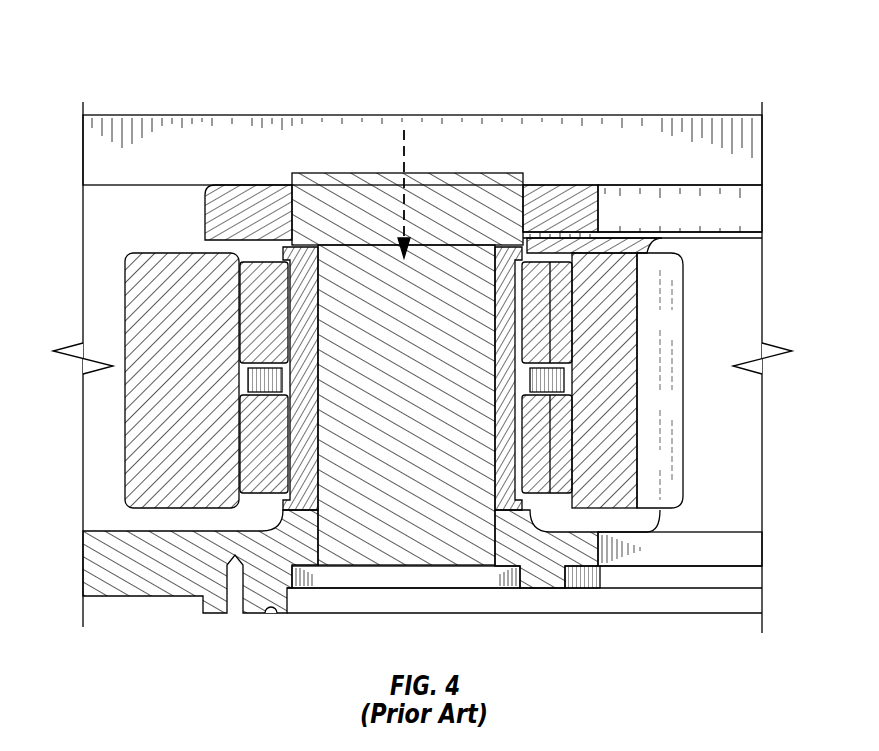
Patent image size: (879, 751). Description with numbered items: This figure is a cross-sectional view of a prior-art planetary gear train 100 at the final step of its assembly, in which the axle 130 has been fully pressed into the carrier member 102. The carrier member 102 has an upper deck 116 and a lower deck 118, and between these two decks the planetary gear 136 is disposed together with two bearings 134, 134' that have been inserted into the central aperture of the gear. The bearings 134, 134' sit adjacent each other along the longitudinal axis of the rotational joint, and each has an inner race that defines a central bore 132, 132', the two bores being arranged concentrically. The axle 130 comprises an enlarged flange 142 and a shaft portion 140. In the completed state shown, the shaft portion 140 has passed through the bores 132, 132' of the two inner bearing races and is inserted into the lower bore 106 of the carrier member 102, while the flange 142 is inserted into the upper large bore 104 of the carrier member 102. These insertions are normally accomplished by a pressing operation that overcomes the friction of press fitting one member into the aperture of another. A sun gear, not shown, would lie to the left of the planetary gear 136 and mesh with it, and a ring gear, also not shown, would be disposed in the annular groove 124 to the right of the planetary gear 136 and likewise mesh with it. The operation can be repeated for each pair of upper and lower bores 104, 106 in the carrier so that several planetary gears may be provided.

The planetary gear train 100 is at (642, 58).
The carrier member 102 is at (733, 108).
The upper large bore 104 is at (514, 208).
The lower bore 106 is at (493, 525).
The upper deck 116 is at (664, 218).
The lower deck 118 is at (640, 560).
The annular groove 124 is at (93, 322).
The axle 130 is at (460, 157).
The central bore 132 is at (250, 312).
The central bore 132' is at (247, 441).
The bearing 134 is at (570, 316).
The bearing 134' is at (576, 444).
The planetary gear 136 is at (662, 340).
The shaft portion 140 is at (423, 402).
The flange 142 is at (479, 218).